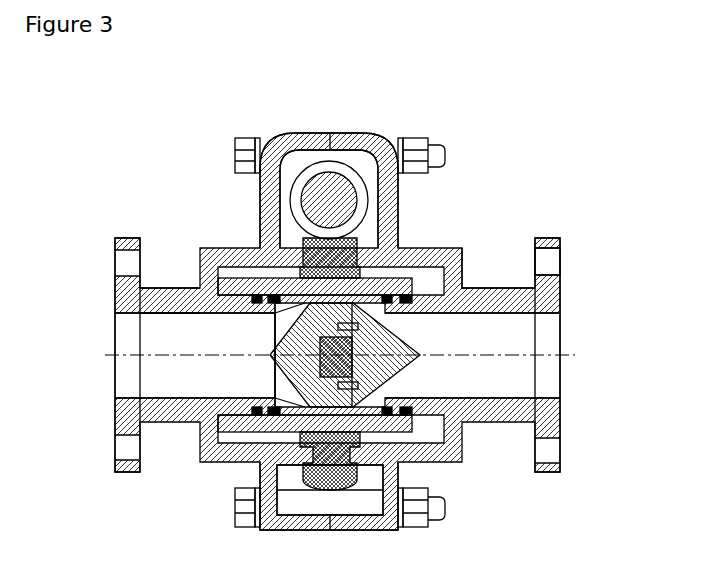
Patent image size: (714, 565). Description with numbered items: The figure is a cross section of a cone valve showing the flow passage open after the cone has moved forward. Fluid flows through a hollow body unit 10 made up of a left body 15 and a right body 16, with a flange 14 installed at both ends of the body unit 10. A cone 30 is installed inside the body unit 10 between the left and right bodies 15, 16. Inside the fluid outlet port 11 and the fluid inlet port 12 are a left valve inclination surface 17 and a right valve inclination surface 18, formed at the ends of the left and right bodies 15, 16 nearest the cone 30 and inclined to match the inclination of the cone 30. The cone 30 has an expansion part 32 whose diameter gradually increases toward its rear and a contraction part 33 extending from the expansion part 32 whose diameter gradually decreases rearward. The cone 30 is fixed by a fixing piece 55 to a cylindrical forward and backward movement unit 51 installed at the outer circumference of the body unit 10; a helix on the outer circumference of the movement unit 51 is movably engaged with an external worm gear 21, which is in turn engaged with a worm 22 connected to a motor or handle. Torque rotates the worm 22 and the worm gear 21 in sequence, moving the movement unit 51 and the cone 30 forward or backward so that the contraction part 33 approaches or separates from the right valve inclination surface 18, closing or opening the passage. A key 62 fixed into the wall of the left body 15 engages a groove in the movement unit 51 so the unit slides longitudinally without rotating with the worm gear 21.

The hollow body unit 10 is at (115, 293).
The fluid outlet port 11 is at (115, 330).
The fluid inlet port 12 is at (532, 333).
The flange 14 is at (560, 296).
The left body 15 is at (162, 289).
The right body 16 is at (557, 268).
The left valve inclination surface 17 is at (115, 435).
The right valve inclination surface 18 is at (463, 252).
The external worm gear 21 is at (398, 221).
The worm 22 is at (337, 172).
The cone 30 is at (362, 378).
The expansion part 32 is at (275, 368).
The contraction part 33 is at (360, 364).
The cylindrical forward and backward movement unit 51 is at (253, 428).
The fixing piece 55 is at (365, 445).
The key 62 is at (256, 296).